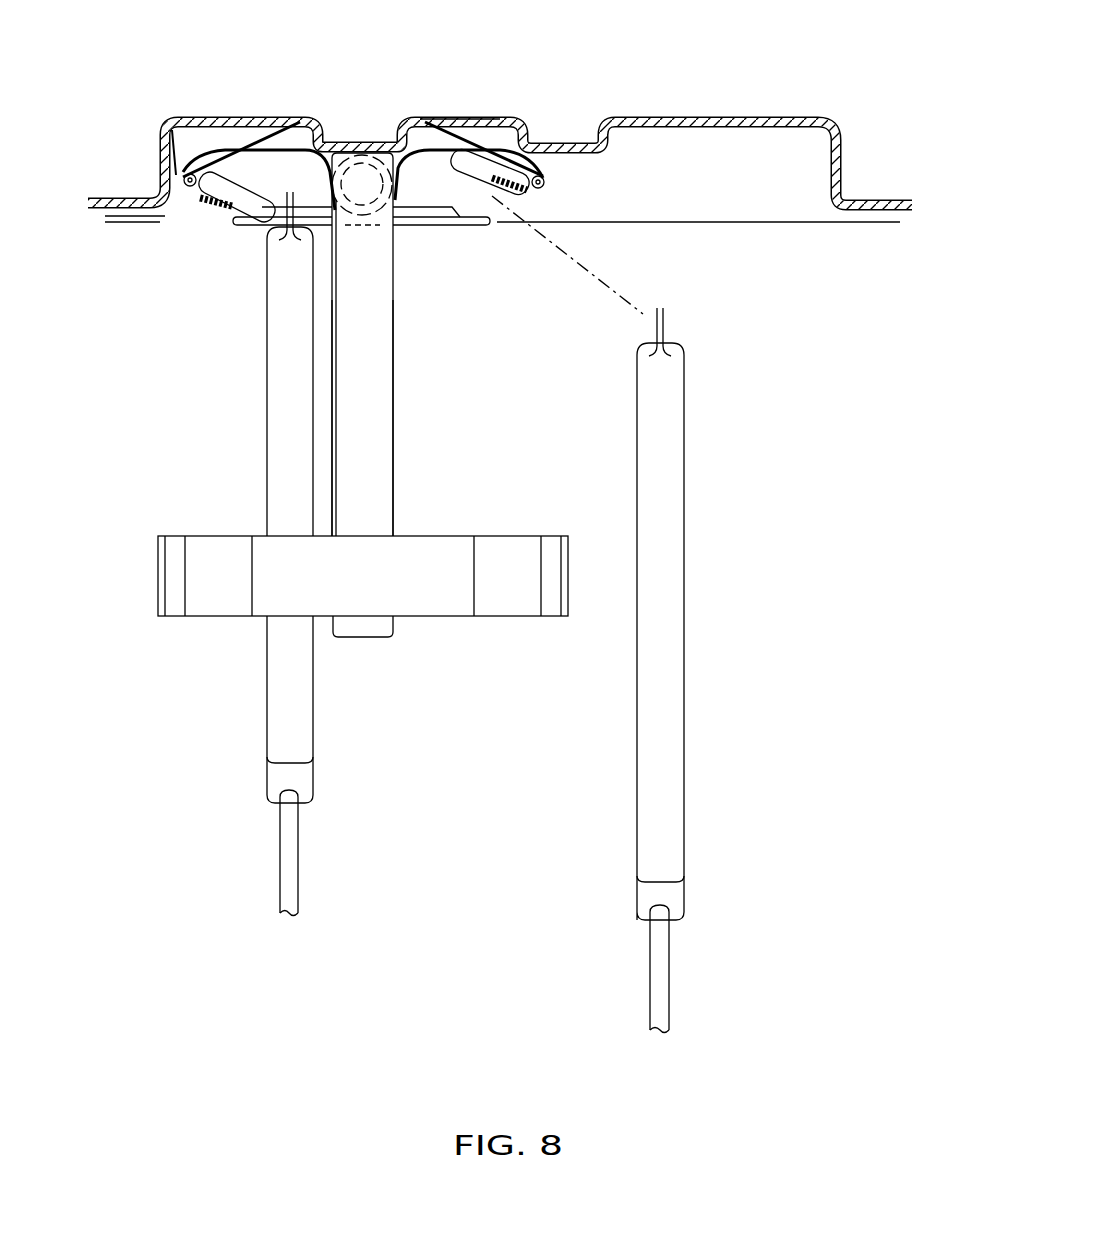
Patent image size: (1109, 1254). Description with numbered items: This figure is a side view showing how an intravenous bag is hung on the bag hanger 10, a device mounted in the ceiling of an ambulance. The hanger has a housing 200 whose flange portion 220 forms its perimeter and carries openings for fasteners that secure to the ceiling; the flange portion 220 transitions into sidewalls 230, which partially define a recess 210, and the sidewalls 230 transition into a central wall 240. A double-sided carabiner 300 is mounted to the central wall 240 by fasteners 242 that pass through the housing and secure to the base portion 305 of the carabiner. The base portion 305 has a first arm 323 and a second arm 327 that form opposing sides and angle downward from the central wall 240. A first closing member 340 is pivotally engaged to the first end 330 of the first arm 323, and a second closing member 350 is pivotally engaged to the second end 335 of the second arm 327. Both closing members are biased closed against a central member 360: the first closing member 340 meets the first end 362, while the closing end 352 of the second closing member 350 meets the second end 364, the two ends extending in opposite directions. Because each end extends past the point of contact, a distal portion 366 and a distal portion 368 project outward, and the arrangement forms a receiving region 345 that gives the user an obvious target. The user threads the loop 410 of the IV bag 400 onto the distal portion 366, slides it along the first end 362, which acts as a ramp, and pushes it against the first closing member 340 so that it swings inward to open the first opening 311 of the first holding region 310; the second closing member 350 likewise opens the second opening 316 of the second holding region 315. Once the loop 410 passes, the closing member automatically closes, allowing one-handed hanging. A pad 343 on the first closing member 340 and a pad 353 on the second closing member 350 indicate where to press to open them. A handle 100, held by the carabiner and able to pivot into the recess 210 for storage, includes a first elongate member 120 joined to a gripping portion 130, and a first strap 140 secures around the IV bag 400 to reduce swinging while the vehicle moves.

The bag hanger 10 is at (866, 82).
The handle 100 is at (393, 405).
The first elongate member 120 is at (378, 470).
The gripping portion 130 is at (375, 638).
The first strap 140 is at (220, 617).
The housing 200 is at (668, 117).
The recess 210 is at (757, 193).
The flange portion 220 is at (870, 215).
The sidewalls 230 is at (843, 153).
The central wall 240 is at (487, 124).
The fasteners 242 is at (440, 119).
The double-sided carabiner 300 is at (285, 138).
The base portion 305 is at (333, 125).
The first holding region 310 is at (257, 168).
The first opening 311 is at (225, 220).
The second holding region 315 is at (396, 125).
The second opening 316 is at (548, 232).
The first arm 323 is at (215, 138).
The second arm 327 is at (562, 150).
The first end 330 is at (180, 166).
The second end 335 is at (550, 168).
The first closing member 340 is at (172, 143).
The pad 343 is at (213, 217).
The receiving region 345 is at (228, 211).
The second closing member 350 is at (524, 125).
The closing end 352 is at (477, 175).
The pad 353 is at (550, 208).
The central member 360 is at (400, 220).
The first end 362 is at (318, 210).
The second end 364 is at (443, 225).
The distal portion 366 is at (228, 218).
The distal portion 368 is at (493, 227).
The IV bag 400 is at (276, 718).
The loop 410 is at (283, 202).